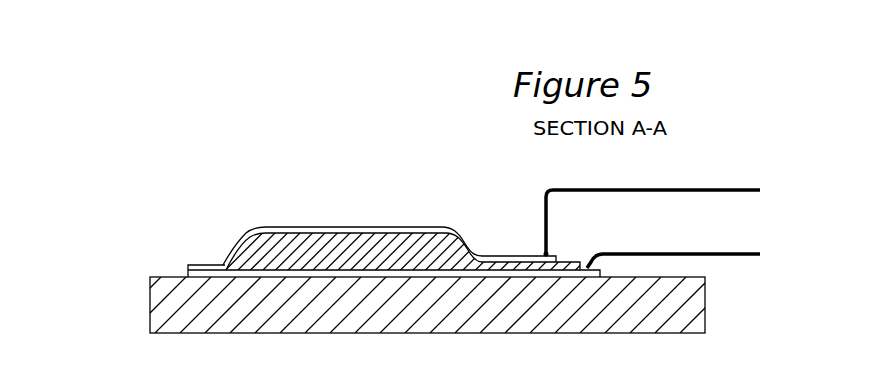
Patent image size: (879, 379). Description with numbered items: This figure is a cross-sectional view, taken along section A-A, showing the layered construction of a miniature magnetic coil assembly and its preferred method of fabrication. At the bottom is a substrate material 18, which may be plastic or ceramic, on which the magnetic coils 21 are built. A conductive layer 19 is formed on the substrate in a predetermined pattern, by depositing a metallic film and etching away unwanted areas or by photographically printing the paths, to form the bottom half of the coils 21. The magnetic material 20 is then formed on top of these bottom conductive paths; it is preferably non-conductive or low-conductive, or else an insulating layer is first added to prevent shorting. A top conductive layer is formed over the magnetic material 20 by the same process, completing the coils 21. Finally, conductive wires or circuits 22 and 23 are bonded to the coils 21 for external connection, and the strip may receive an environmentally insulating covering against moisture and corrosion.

The substrate material 18 is at (163, 288).
The conductive layer 19 is at (200, 273).
The magnetic material 20 is at (270, 245).
The magnetic coils 21 is at (377, 223).
The conductive wire or circuit 22 is at (703, 183).
The conductive wire or circuit 23 is at (697, 248).